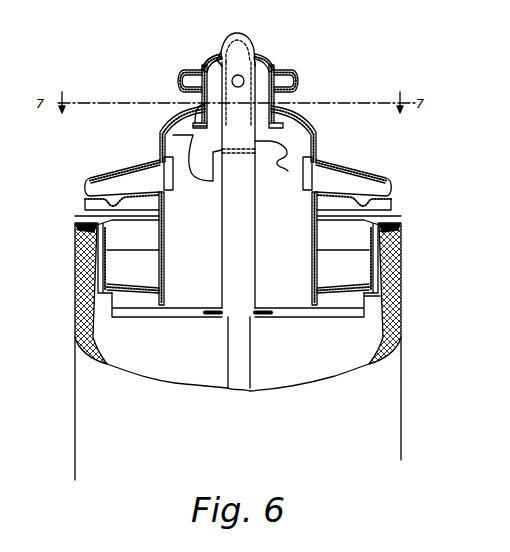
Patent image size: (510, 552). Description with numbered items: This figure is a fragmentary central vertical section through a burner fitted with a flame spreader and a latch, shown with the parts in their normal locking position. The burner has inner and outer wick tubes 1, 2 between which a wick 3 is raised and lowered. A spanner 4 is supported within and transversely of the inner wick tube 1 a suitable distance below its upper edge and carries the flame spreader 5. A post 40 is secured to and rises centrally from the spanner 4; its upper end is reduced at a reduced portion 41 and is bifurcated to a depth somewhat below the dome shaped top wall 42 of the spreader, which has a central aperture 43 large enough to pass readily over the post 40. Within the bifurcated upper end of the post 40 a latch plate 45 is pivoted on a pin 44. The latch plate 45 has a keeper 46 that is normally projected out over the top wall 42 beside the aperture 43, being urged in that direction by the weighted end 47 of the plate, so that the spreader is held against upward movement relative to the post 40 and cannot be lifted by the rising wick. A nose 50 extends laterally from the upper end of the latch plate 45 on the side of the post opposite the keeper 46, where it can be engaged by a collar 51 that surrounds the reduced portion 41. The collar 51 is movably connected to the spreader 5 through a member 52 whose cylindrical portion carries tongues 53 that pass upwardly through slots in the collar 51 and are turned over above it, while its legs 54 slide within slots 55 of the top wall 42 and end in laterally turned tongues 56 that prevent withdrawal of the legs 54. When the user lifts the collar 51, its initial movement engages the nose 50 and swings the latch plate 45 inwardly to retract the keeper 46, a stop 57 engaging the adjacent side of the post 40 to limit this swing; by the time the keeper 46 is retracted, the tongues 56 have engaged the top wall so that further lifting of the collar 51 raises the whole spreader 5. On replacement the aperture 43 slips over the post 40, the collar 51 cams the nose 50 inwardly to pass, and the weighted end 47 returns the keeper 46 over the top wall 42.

The inner wick tube 1 is at (100, 343).
The outer wick tube 2 is at (386, 385).
The wick 3 is at (402, 262).
The spanner 4 is at (283, 318).
The flame spreader 5 is at (323, 158).
The post 40 is at (256, 233).
The reduced portion 41 is at (248, 48).
The dome shaped top wall 42 is at (315, 122).
The central aperture 43 is at (201, 92).
The pin 44 is at (244, 79).
The latch plate 45 is at (273, 104).
The keeper 46 is at (281, 82).
The weighted end 47 is at (207, 183).
The nose 50 is at (222, 48).
The collar 51 is at (213, 59).
The member 52 is at (186, 76).
The tongues 53 is at (203, 68).
The legs 54 is at (200, 110).
The slots 55 is at (207, 113).
The laterally turned tongues 56 is at (158, 129).
The stop 57 is at (284, 169).